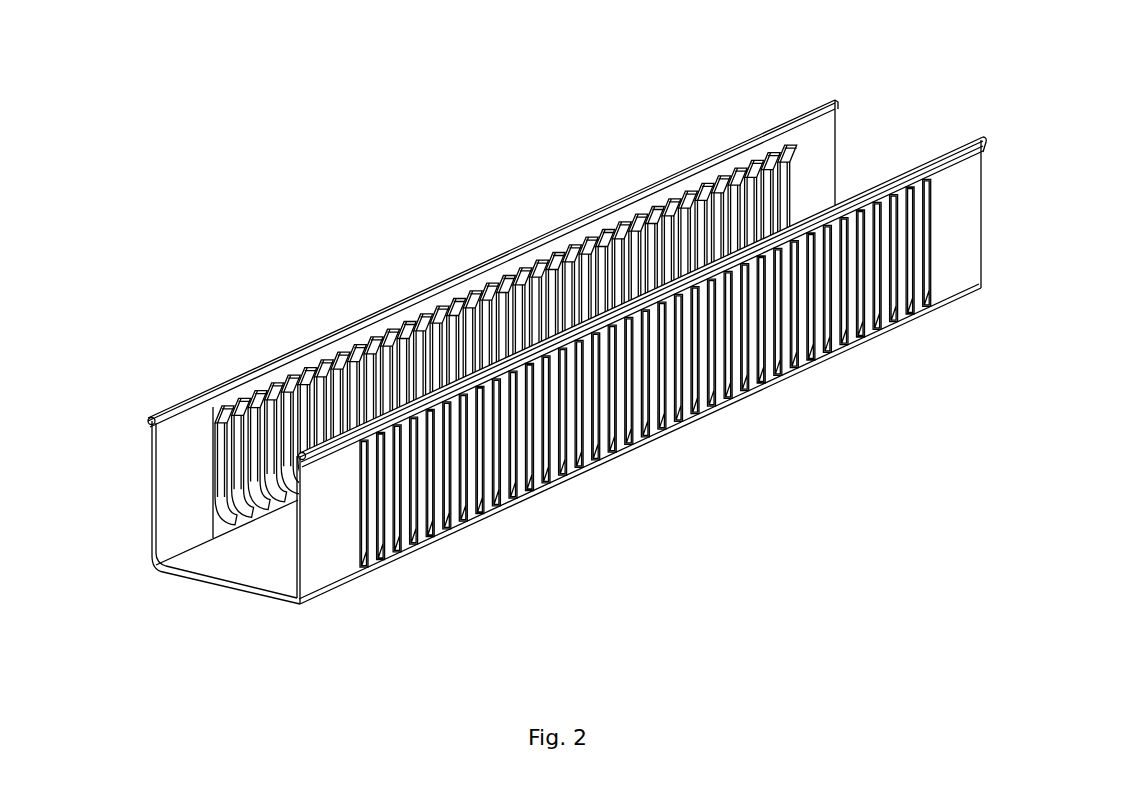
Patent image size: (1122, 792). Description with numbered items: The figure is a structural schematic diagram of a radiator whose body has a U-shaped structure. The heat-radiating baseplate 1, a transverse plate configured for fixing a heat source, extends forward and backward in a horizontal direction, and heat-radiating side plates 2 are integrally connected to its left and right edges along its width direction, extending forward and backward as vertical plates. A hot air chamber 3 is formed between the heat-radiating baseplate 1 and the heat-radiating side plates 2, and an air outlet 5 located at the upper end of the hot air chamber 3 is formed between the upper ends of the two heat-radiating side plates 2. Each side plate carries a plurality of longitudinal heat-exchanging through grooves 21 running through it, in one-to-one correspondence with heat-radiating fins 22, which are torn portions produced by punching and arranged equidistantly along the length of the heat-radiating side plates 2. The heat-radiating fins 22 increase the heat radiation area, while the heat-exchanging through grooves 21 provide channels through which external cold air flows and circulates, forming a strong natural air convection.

The heat-radiating baseplate 1 is at (256, 604).
The heat-radiating side plates 2 is at (187, 481).
The heat-exchanging through grooves 21 is at (210, 423).
The heat-radiating fins 22 is at (333, 360).
The hot air chamber 3 is at (253, 548).
The air outlet 5 is at (849, 130).